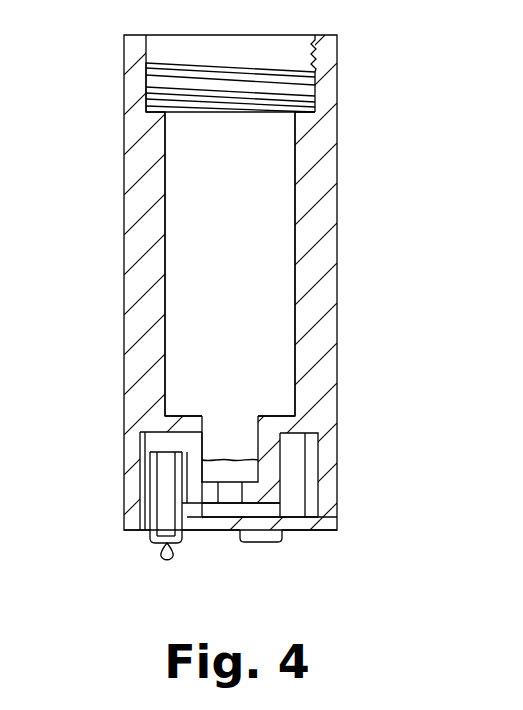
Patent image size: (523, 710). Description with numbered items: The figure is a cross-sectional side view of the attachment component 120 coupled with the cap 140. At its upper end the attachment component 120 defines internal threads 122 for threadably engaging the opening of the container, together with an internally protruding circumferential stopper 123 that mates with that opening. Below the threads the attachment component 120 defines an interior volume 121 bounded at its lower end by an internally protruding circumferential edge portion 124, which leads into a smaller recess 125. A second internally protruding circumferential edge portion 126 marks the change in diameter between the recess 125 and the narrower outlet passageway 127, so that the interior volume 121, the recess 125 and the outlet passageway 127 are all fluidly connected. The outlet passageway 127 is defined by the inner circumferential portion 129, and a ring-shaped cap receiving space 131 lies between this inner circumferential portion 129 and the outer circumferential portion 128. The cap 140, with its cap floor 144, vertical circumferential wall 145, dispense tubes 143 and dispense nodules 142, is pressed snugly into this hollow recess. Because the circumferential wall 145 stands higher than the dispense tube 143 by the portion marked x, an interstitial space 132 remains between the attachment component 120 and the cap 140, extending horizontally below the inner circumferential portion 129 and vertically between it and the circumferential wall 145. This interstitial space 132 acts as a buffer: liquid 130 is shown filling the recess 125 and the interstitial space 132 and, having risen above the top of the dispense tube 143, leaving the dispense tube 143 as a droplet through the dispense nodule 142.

The attachment component 120 is at (320, 252).
The interior volume 121 is at (211, 242).
The internal threads 122 is at (298, 92).
The circumferential stopper 123 is at (297, 112).
The circumferential edge portion 124 is at (283, 400).
The recess 125 is at (230, 449).
The second circumferential edge portion 126 is at (300, 457).
The outlet passageway 127 is at (230, 493).
The outer circumferential portion 128 is at (325, 525).
The inner circumferential portion 129 is at (150, 473).
The liquid 130 is at (198, 440).
The cap receiving space 131 is at (223, 510).
The interstitial space 132 is at (150, 497).
The cap 140 is at (291, 574).
The dispense nodule 142 is at (147, 537).
The dispense tube 143 is at (125, 517).
The cap floor 144 is at (275, 523).
The circumferential wall 145 is at (305, 478).
The wall height excess x is at (140, 432).